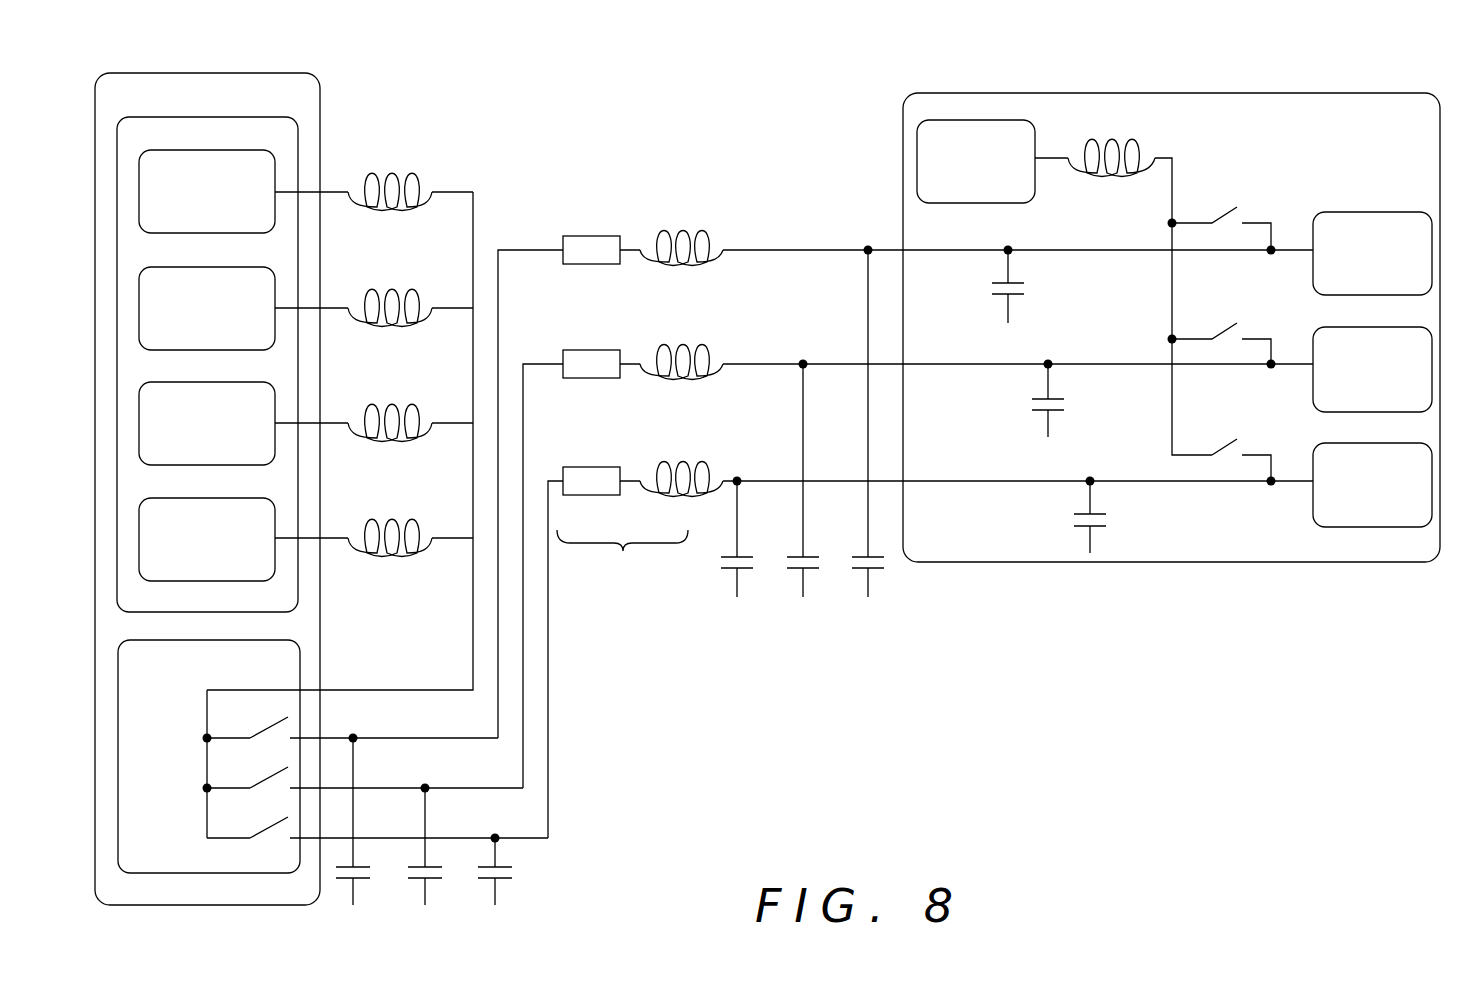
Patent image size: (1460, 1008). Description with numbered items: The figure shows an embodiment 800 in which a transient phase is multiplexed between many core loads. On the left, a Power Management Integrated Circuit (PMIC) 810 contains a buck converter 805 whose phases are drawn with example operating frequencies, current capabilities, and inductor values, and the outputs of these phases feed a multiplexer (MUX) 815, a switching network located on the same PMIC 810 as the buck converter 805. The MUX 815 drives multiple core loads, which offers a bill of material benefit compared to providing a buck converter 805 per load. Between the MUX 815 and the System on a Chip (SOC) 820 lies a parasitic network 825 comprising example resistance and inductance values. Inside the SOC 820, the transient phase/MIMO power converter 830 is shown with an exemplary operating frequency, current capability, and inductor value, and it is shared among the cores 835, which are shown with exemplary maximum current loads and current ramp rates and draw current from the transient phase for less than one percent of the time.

The embodiment of the present disclosure 800 is at (488, 42).
The buck converter 805 is at (166, 117).
The Power Management Integrated Circuit 810 is at (172, 73).
The multiplexer 815 is at (167, 640).
The System on a Chip 820 is at (976, 93).
The parasitic network 825 is at (618, 597).
The transient phase/MIMO power converter 830 is at (975, 120).
The cores 835 is at (1361, 212).